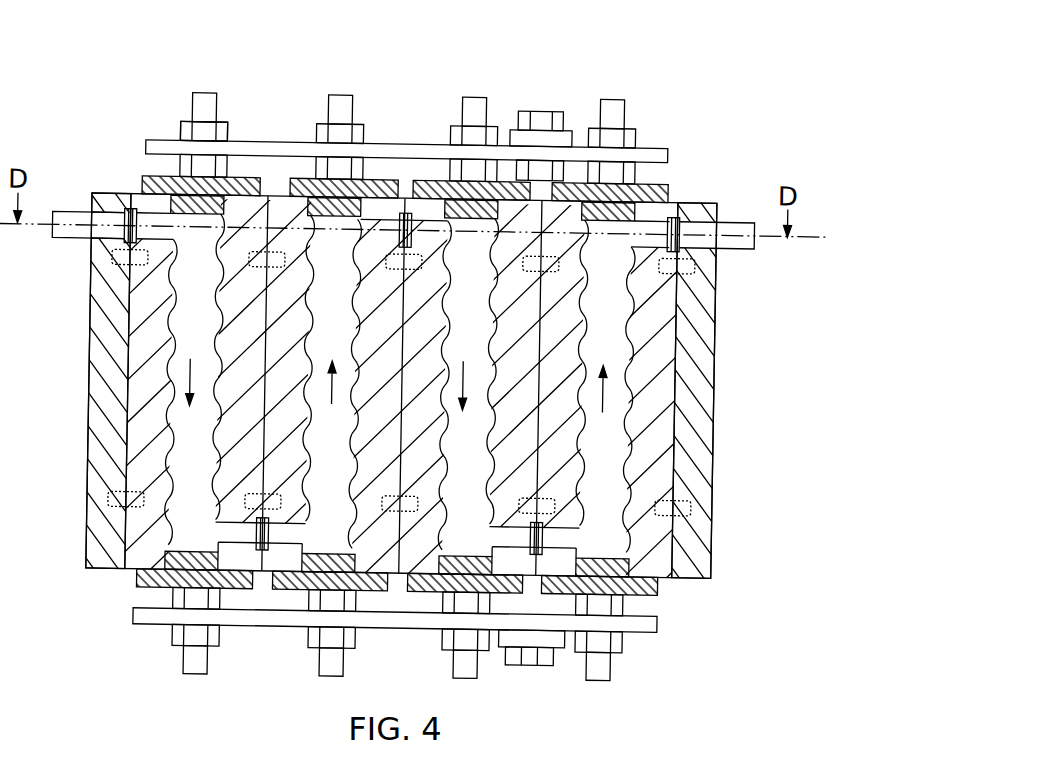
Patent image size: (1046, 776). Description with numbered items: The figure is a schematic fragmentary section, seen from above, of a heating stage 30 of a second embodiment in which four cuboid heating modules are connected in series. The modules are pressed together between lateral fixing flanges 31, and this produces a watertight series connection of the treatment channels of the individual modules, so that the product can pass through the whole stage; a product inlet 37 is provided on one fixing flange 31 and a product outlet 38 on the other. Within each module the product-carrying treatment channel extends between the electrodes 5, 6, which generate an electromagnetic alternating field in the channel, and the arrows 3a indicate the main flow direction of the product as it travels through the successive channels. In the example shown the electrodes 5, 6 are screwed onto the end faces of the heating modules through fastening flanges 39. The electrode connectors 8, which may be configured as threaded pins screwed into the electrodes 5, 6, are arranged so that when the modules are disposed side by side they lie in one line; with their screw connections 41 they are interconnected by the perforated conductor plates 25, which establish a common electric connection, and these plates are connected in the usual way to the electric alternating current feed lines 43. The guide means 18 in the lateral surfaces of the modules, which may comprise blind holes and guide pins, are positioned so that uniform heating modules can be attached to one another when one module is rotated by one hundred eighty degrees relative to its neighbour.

The heating stage 30 is at (673, 70).
The fixing flange 31 is at (92, 378).
The product inlet 37 is at (70, 238).
The product outlet 38 is at (735, 238).
The fastening flange 39 is at (142, 180).
The screw connection 41 is at (176, 128).
The electrode connector 8 is at (198, 91).
The conductor plate 25 is at (274, 139).
The alternating current feed line 43 is at (566, 138).
The electrode 5 is at (440, 193).
The electrode 6 is at (636, 200).
The guide means 18 is at (112, 498).
The main flow direction 3a is at (262, 380).